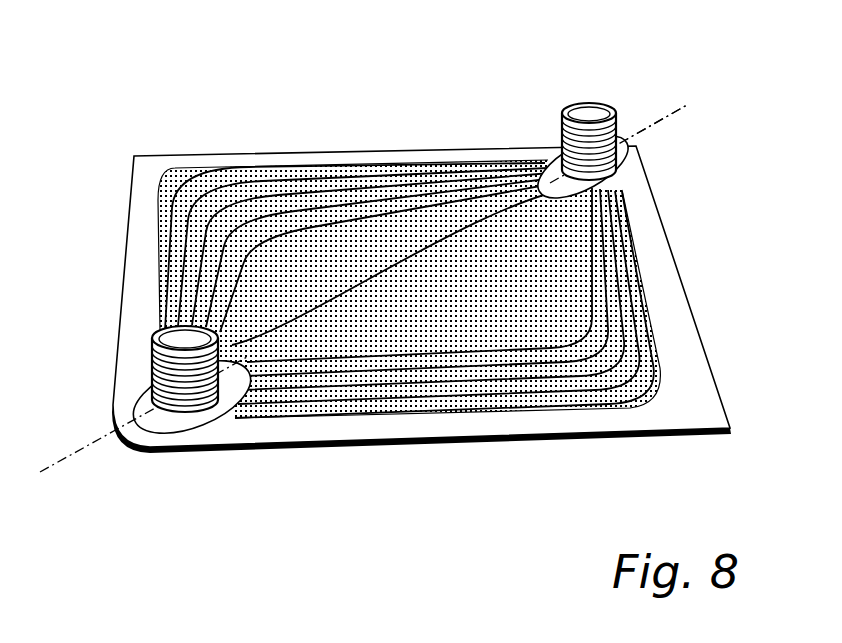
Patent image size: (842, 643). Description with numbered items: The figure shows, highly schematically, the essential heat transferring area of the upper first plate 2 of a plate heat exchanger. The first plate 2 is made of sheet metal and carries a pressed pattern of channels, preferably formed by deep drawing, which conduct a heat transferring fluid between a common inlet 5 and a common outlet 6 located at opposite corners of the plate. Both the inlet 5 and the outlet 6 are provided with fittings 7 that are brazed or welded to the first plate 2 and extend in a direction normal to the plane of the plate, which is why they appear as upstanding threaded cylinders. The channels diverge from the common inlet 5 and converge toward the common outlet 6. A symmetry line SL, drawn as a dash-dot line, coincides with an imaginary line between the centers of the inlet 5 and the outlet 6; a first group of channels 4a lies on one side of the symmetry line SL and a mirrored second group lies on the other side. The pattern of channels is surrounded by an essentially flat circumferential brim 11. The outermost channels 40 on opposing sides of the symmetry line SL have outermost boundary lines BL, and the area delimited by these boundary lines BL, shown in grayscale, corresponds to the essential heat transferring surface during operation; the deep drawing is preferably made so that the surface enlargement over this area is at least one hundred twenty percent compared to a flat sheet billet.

The first plate 2 is at (466, 307).
The circumferential brim 11 is at (703, 423).
The first group of channels 4a is at (480, 222).
The outermost channels 40 is at (203, 170).
The boundary line BL is at (165, 200).
The symmetry line SL is at (364, 284).
The common inlet 5 is at (364, 284).
The common outlet 6 is at (588, 103).
The fitting 7 is at (156, 332).